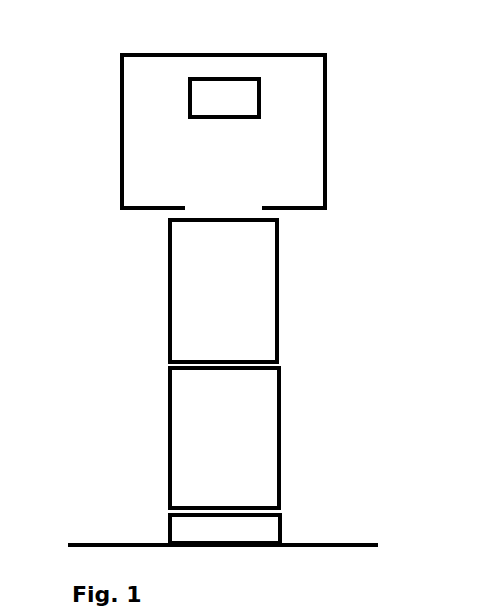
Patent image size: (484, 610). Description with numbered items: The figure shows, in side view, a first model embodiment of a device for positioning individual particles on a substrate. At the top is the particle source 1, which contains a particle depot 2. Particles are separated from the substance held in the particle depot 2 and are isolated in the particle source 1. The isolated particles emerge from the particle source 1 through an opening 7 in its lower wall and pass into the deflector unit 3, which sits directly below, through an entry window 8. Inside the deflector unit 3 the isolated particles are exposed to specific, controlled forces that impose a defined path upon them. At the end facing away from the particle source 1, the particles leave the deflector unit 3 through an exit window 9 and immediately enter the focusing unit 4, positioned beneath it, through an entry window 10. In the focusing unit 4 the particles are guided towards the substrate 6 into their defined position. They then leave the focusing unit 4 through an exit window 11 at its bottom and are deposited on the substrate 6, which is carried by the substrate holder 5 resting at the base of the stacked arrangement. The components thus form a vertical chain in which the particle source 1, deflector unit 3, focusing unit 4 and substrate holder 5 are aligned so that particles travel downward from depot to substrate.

The particle source 1 is at (282, 166).
The particle depot 2 is at (225, 97).
The deflector unit 3 is at (245, 290).
The focusing unit 4 is at (243, 442).
The substrate holder 5 is at (132, 542).
The substrate 6 is at (248, 532).
The opening 7 is at (212, 208).
The entry window 8 is at (232, 220).
The exit window 9 is at (225, 358).
The entry window 10 is at (227, 370).
The exit window 11 is at (223, 507).